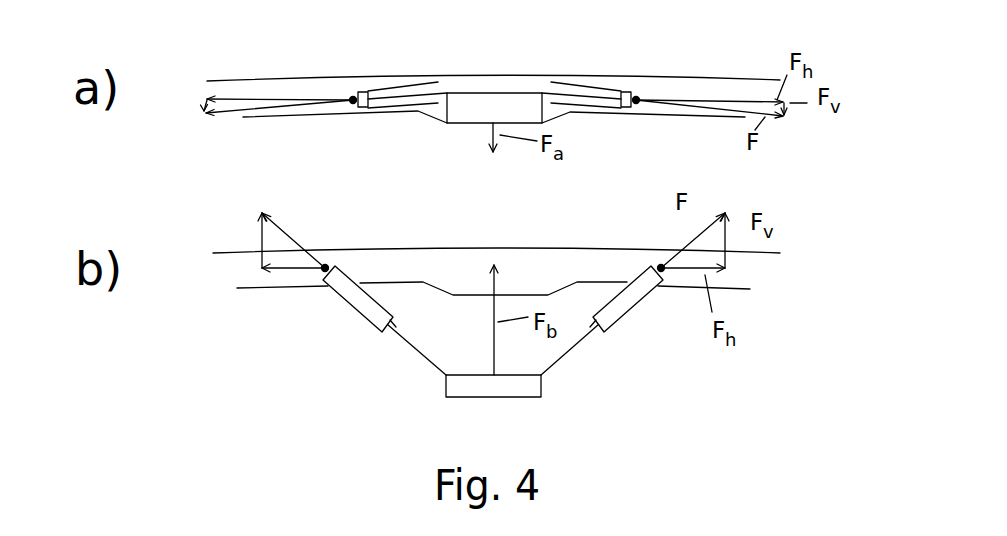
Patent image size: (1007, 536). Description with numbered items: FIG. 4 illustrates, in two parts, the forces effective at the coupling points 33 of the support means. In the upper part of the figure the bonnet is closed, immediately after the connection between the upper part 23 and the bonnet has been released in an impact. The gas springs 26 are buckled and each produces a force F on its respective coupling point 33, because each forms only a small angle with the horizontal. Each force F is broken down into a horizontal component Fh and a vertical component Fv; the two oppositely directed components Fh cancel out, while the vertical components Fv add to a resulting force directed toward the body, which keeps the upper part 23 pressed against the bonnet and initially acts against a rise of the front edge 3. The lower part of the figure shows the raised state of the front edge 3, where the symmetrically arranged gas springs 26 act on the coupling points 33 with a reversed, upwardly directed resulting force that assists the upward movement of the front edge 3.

The front edge 3 is at (290, 78).
The upper part 23 is at (407, 85).
The gas springs 26 is at (513, 91).
The coupling points 33 is at (643, 88).